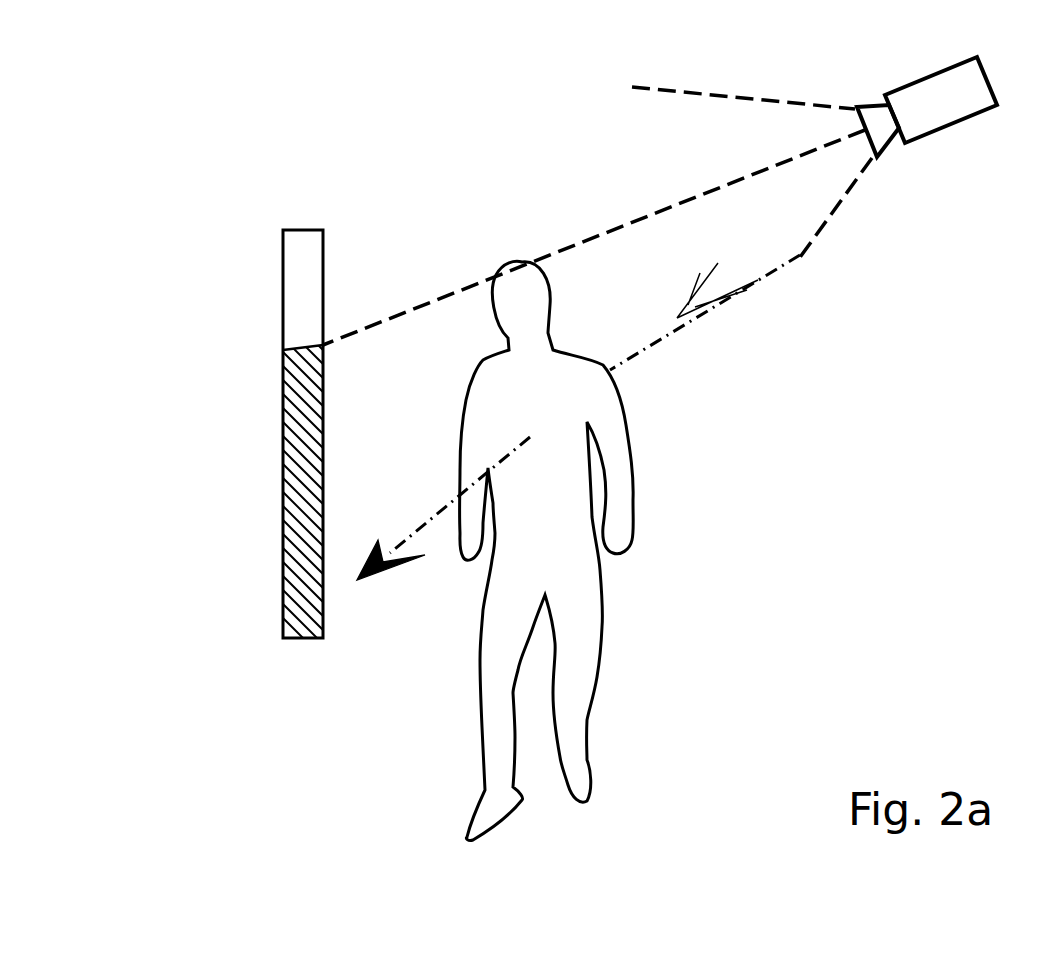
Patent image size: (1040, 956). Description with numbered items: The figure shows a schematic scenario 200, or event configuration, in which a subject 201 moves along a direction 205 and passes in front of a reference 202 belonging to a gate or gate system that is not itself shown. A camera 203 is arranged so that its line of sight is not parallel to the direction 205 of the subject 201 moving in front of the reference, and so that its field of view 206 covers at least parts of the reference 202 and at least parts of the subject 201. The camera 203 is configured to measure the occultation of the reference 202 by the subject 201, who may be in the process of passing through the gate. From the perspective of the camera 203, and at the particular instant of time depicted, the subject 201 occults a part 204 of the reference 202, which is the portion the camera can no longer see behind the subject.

The scenario 200 is at (318, 83).
The subject 201 is at (512, 413).
The reference 202 is at (303, 258).
The camera 203 is at (935, 88).
The part of the reference 204 is at (293, 460).
The direction 205 is at (653, 338).
The field of view 206 is at (818, 197).